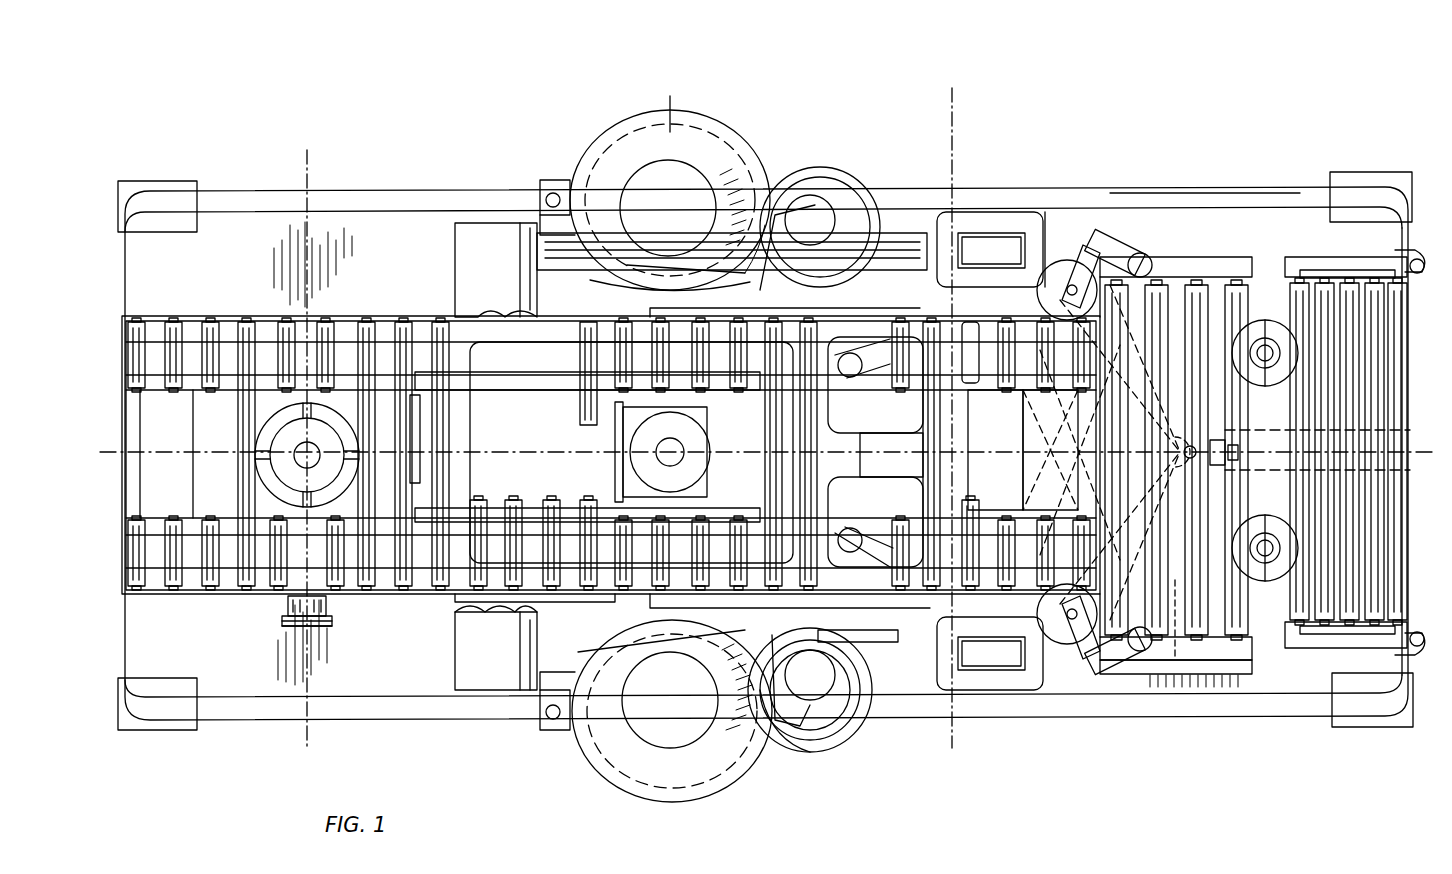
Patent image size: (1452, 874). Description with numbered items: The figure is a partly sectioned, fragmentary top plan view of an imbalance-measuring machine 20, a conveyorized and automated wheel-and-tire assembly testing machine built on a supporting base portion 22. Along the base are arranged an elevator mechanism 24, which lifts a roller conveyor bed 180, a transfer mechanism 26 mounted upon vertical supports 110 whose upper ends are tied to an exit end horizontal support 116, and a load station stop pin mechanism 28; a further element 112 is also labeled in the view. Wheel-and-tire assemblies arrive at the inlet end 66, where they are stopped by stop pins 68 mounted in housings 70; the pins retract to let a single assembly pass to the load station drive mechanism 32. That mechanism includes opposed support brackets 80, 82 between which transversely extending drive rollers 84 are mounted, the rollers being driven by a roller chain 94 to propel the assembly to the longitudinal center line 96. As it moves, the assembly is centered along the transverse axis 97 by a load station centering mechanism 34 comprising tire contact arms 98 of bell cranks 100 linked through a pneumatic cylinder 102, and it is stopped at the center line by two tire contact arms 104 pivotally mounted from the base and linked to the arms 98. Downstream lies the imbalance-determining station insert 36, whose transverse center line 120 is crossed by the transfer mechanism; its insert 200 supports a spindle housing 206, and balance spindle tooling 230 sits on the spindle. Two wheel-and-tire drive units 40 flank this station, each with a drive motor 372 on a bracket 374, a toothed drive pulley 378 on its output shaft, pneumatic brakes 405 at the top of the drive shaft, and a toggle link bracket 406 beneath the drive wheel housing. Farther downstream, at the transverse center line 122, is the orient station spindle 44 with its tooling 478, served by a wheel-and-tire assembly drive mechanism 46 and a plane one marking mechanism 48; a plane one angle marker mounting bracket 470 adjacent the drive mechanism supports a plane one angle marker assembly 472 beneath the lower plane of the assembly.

The imbalance-measuring machine 20 is at (765, 380).
The supporting base portion 22 is at (1190, 192).
The elevator mechanism 24 is at (720, 312).
The transfer mechanism 26 is at (534, 190).
The load station stop pin mechanism 28 is at (1273, 258).
The load station drive mechanism 32 is at (1125, 200).
The load station centering mechanism 34 is at (1058, 225).
The imbalance-determining station insert 36 is at (612, 296).
The wheel-and-tire drive units 40 is at (732, 105).
The orient station spindle 44 is at (340, 342).
The wheel-and-tire assembly drive mechanism 46 is at (300, 555).
The plane one marking mechanism 48 is at (322, 634).
The inlet end 66 is at (1412, 396).
The stop pins 68 is at (1264, 370).
The housings 70 is at (1259, 324).
The support bracket 80 is at (1232, 668).
The support bracket 82 is at (1172, 260).
The drive rollers 84 is at (1232, 322).
The roller chain 94 is at (1175, 584).
The longitudinal center line 96 is at (1410, 442).
The transverse axis 97 is at (951, 97).
The tire contact arms 98 is at (1143, 266).
The bell cranks 100 is at (1098, 230).
The pneumatic cylinder 102 is at (1262, 520).
The tire contact arms 104 is at (850, 368).
The vertical supports 110 is at (993, 232).
The drive motor 112 is at (851, 238).
The exit end horizontal support 116 is at (483, 668).
The transverse center line 120 is at (670, 96).
The transverse center line 122 is at (306, 164).
The roller conveyor bed 180 is at (418, 318).
The insert 200 is at (604, 452).
The spindle housing 206 is at (627, 426).
The balance spindle tooling 230 is at (714, 444).
The drive motor 372 is at (834, 730).
The bracket 374 is at (762, 600).
The toothed drive pulley 378 is at (814, 727).
The pneumatic brakes 405 is at (739, 150).
The toggle link bracket 406 is at (553, 180).
The plane one angle marker mounting bracket 470 is at (290, 625).
The plane one angle marker assembly 472 is at (300, 614).
The tooling 478 is at (266, 430).